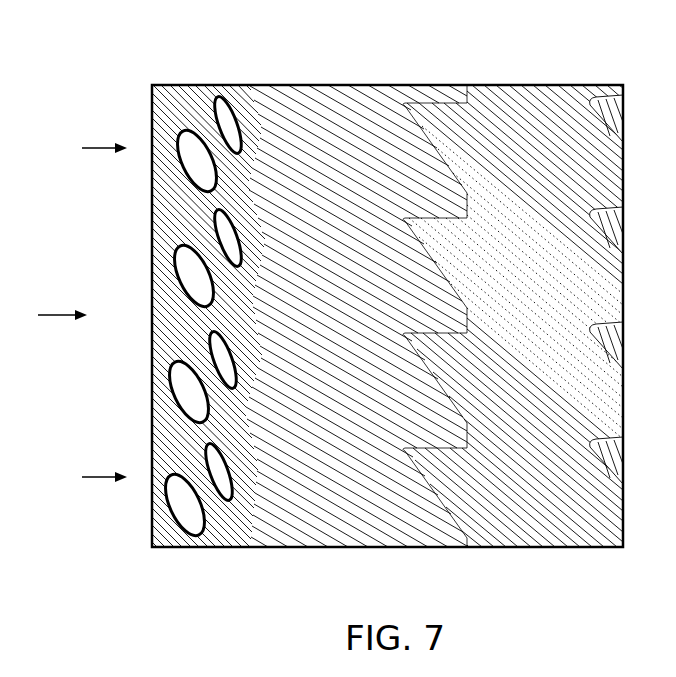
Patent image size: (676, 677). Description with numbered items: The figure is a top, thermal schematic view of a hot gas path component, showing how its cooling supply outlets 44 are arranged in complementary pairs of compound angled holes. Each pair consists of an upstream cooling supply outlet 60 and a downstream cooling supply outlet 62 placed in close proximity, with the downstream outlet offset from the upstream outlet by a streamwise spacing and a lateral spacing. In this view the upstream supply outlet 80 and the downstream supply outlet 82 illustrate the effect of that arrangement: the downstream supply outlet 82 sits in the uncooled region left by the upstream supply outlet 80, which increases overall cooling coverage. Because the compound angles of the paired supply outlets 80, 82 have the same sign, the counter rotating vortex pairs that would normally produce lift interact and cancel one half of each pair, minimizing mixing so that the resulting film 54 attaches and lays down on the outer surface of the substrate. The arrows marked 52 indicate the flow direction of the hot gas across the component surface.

The cooling supply outlets 44 is at (158, 291).
The upstream cooling supply outlet 60 is at (181, 131).
The downstream cooling supply outlet 62 is at (217, 92).
The upstream supply outlet 80 is at (177, 260).
The downstream supply outlet 82 is at (220, 224).
The film 54 is at (310, 228).
The flow direction 52 is at (93, 148).